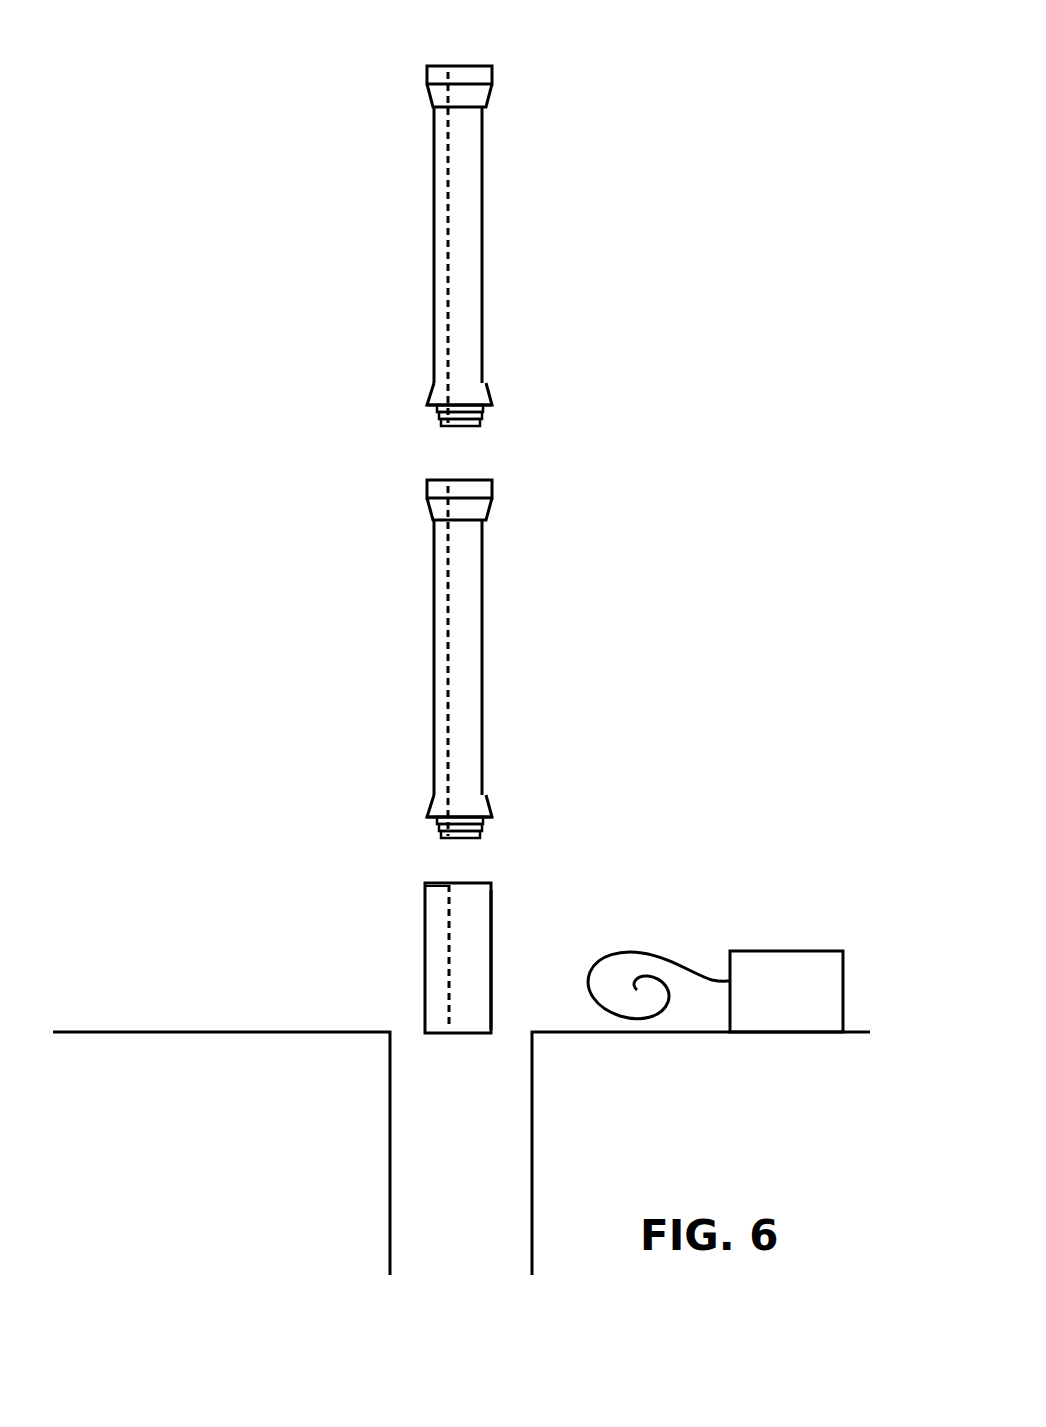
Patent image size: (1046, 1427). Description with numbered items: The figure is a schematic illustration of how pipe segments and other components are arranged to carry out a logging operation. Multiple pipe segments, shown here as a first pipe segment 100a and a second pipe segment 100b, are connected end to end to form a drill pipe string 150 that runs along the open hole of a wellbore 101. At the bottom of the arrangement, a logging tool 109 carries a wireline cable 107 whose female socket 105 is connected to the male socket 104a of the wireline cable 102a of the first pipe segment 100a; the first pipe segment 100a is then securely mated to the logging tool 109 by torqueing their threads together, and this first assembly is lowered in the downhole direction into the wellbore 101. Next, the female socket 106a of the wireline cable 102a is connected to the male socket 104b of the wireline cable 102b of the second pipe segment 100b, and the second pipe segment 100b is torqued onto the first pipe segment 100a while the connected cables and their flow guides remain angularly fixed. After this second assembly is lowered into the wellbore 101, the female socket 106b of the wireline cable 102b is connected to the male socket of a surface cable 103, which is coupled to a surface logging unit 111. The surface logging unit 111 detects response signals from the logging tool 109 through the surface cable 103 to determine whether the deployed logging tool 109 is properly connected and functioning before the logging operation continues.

The drill pipe string 150 is at (752, 368).
The second pipe segment 100b is at (505, 250).
The wireline cable of second pipe segment 102b is at (448, 210).
The female socket of wireline cable 102b 106b is at (448, 72).
The male socket of wireline cable 102b 104b is at (445, 428).
The first pipe segment 100a is at (522, 668).
The wireline cable of first pipe segment 102a is at (448, 625).
The female socket of wireline cable 102a 106a is at (448, 482).
The male socket of wireline cable 102a 104a is at (445, 838).
The wireline cable of logging tool 107 is at (449, 962).
The female socket of wireline cable 107 105 is at (448, 888).
The logging tool 109 is at (488, 943).
The wellbore 101 is at (408, 1058).
The surface cable 103 is at (640, 950).
The surface logging unit 111 is at (786, 991).